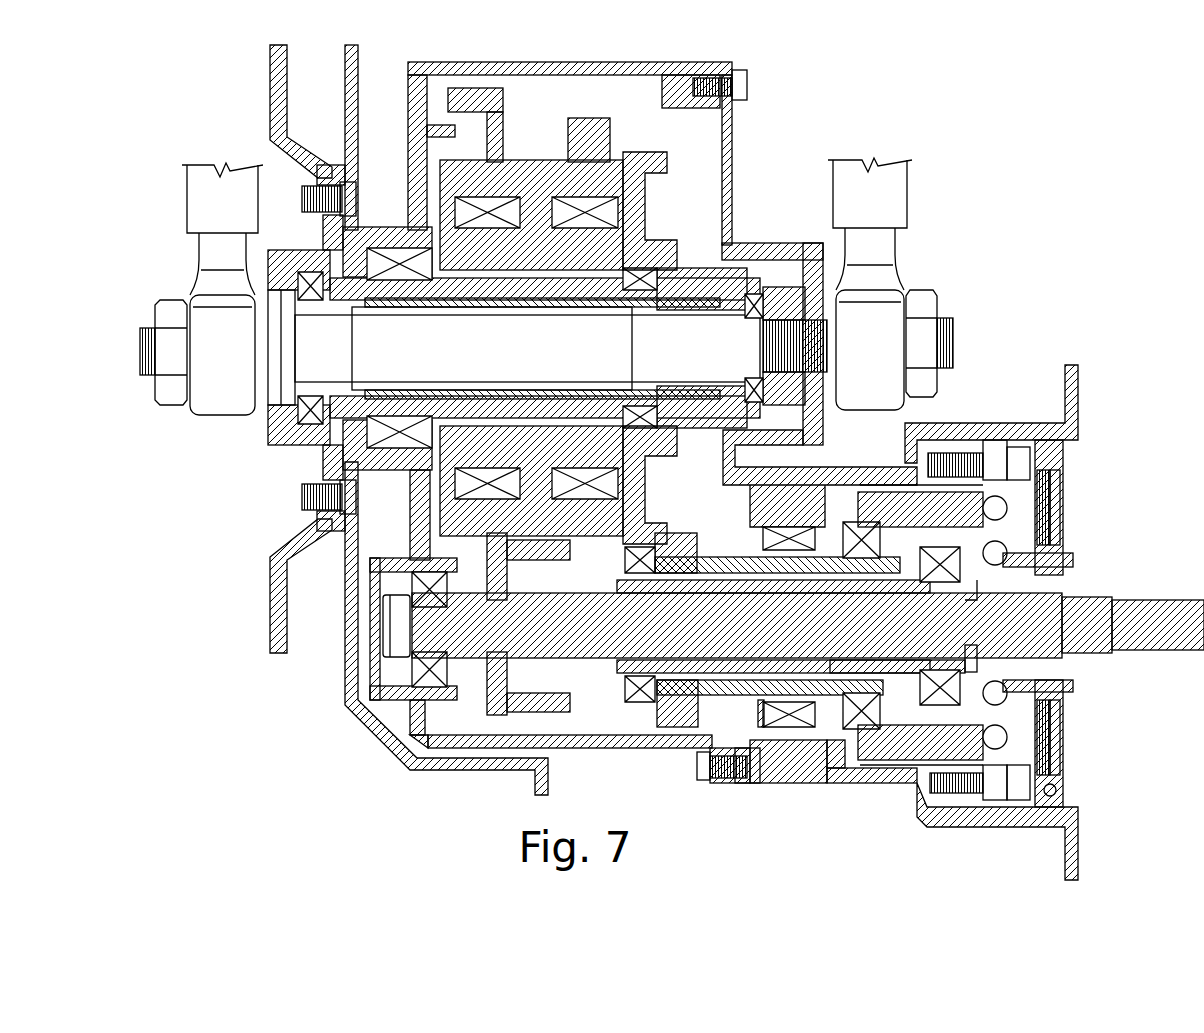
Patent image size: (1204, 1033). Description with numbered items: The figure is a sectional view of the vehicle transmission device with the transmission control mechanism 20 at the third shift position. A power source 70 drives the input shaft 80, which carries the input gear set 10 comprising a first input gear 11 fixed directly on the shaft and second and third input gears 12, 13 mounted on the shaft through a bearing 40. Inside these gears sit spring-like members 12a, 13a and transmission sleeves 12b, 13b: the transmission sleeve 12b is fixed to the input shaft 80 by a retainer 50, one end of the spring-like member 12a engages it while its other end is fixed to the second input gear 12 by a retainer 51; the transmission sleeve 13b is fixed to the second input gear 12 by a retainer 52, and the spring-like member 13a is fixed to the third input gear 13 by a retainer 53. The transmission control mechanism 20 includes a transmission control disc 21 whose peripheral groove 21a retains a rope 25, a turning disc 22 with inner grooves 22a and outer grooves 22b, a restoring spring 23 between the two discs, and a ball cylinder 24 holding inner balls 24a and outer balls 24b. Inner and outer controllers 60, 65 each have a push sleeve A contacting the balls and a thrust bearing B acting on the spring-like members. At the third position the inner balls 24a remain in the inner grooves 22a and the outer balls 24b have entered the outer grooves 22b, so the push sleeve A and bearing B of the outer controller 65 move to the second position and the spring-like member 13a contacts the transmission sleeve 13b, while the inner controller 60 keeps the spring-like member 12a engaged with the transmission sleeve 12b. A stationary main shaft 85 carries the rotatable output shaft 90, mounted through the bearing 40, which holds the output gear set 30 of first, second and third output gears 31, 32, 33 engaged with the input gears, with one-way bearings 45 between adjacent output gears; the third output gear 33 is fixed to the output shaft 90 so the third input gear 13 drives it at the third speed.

The input gear set 10 is at (600, 748).
The first input gear 11 is at (455, 670).
The second input gear 12 is at (583, 712).
The spring-like member 12a is at (726, 783).
The transmission sleeve 12b is at (933, 658).
The third input gear 13 is at (660, 727).
The spring-like member 13a is at (750, 783).
The transmission sleeve 13b is at (838, 768).
The transmission control mechanism 20 is at (1070, 480).
The transmission control disc 21 is at (1070, 460).
The groove 21a is at (1040, 827).
The turning disc 22 is at (1010, 508).
The inner grooves 22a is at (1073, 560).
The outer grooves 22b is at (1050, 500).
The restoring spring 23 is at (1060, 520).
The ball cylinder 24 is at (990, 480).
The inner balls 24a is at (1012, 595).
The outer balls 24b is at (950, 455).
The rope 25 is at (1058, 790).
The output gear set 30 is at (538, 98).
The first output gear 31 is at (472, 88).
The second output gear 32 is at (590, 118).
The third output gear 33 is at (630, 152).
The bearing 40 is at (585, 300).
The one-way bearing 45 is at (463, 213).
The retainer 50 is at (970, 647).
The retainer 51 is at (625, 605).
The retainer 52 is at (870, 783).
The retainer 53 is at (687, 727).
The inner controller 60 is at (907, 493).
The outer controller 65 is at (800, 783).
The power source 70 is at (1165, 600).
The input shaft 80 is at (383, 625).
The main shaft 85 is at (446, 357).
The output shaft 90 is at (722, 305).
The push sleeve A is at (863, 485).
The bearing B is at (853, 522).